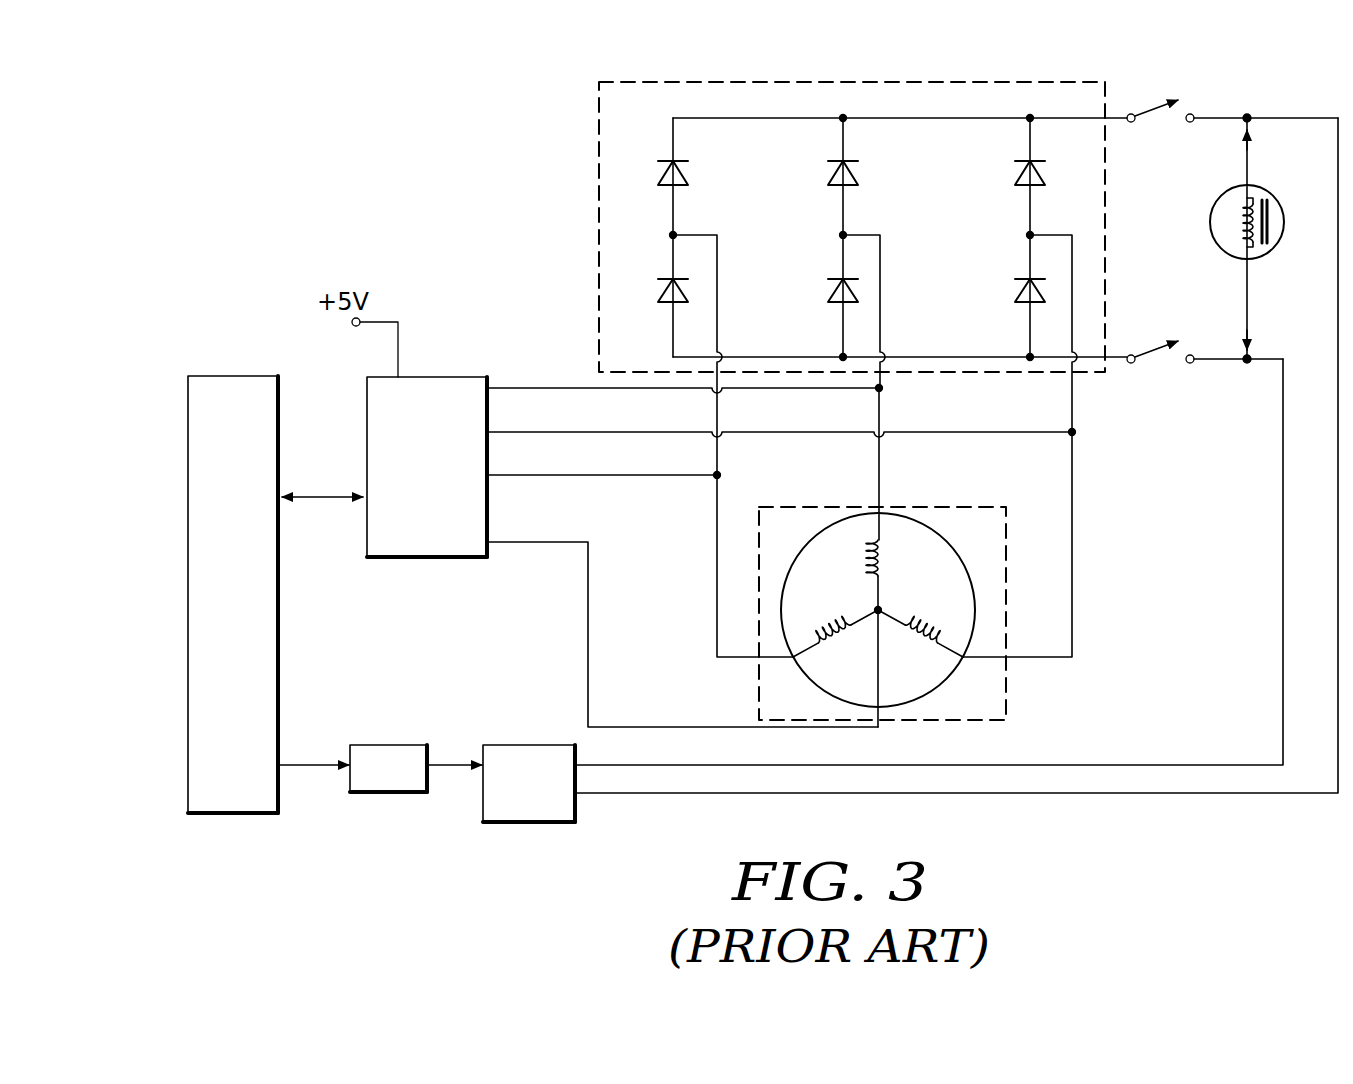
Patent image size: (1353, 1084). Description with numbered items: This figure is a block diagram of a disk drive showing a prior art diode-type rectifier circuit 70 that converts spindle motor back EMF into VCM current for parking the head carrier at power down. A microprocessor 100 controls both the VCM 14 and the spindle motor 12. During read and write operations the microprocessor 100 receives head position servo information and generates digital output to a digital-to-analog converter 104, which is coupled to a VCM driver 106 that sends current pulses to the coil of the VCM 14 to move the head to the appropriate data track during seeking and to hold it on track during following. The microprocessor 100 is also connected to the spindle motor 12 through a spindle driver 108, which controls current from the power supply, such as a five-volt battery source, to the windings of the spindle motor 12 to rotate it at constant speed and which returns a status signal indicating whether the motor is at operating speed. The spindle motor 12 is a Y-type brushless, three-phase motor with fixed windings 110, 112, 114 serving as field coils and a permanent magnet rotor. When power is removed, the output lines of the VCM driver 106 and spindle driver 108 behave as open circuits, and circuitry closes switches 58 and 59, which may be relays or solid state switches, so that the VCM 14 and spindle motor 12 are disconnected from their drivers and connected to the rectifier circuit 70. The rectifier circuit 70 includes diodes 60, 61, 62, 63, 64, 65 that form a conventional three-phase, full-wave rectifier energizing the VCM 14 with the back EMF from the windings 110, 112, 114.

The spindle motor 12 is at (1006, 712).
The VCM 14 is at (1270, 200).
The switch 58 is at (1160, 96).
The switch 59 is at (1160, 338).
The diode 60 is at (680, 188).
The diode 61 is at (852, 188).
The diode 62 is at (1018, 188).
The diode 63 is at (661, 306).
The diode 64 is at (831, 306).
The diode 65 is at (1019, 306).
The rectifier circuit 70 is at (598, 138).
The microprocessor 100 is at (188, 516).
The digital-to-analog converter 104 is at (392, 745).
The VCM driver 106 is at (517, 745).
The spindle driver 108 is at (430, 557).
The winding 110 is at (838, 645).
The winding 112 is at (880, 560).
The winding 114 is at (945, 600).